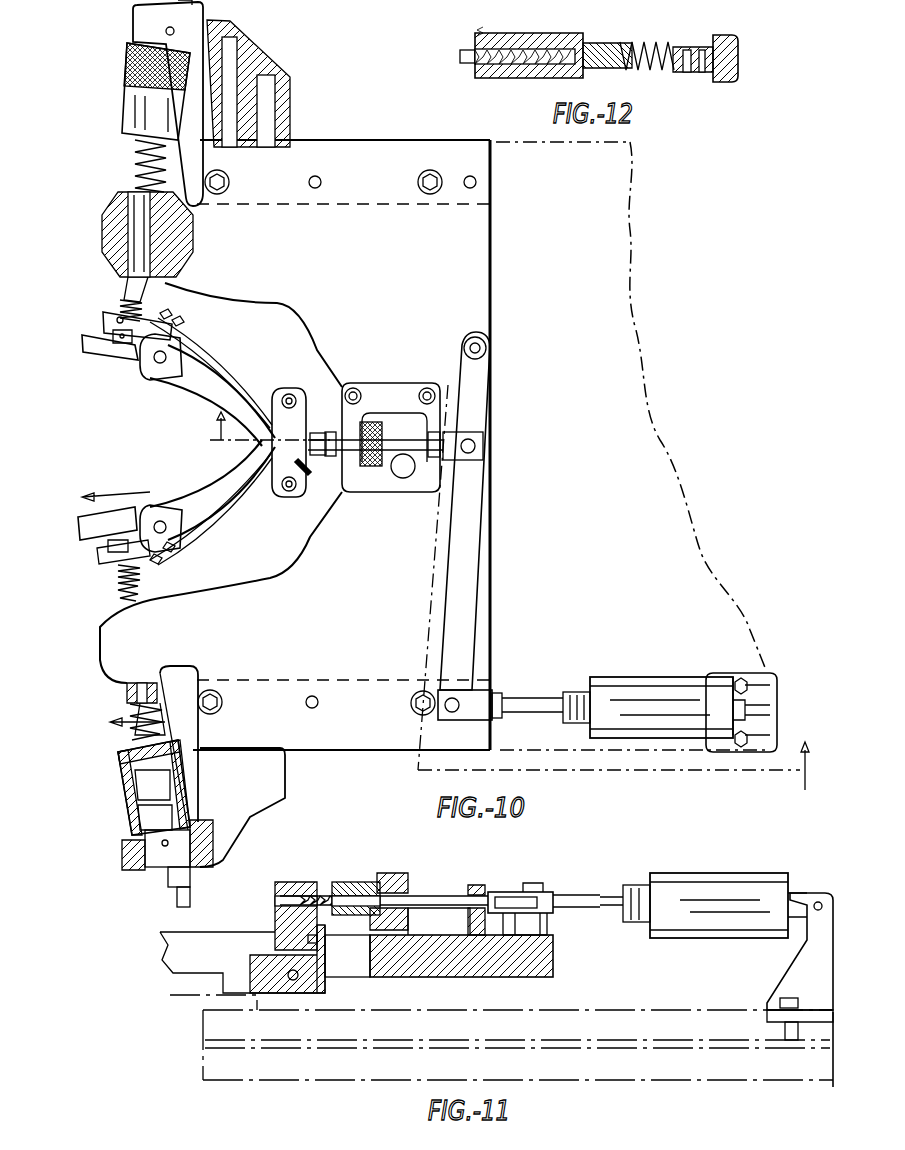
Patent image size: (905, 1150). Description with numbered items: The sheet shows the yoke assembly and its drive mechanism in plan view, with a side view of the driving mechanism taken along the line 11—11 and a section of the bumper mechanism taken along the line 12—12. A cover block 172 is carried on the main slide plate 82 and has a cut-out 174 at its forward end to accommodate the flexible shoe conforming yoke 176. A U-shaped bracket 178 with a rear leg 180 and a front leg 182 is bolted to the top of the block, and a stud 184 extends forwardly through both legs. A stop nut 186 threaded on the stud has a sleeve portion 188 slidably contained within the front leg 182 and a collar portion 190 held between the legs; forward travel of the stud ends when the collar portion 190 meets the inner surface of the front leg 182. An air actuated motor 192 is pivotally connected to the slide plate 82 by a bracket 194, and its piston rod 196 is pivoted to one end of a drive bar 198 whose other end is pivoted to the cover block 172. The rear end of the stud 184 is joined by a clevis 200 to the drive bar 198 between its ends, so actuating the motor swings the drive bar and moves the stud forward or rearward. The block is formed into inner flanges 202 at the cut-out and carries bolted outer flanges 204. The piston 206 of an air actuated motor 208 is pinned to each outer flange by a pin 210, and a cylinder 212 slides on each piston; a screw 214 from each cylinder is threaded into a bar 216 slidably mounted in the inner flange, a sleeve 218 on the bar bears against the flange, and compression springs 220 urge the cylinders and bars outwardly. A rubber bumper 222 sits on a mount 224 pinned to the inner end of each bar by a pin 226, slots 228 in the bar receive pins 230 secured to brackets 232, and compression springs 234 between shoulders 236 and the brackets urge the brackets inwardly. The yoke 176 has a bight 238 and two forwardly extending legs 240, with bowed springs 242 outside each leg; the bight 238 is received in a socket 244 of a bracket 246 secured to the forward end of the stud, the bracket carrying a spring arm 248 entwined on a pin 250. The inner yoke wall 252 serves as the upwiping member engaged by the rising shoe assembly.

In FIG. 10, the slide plate 82 is at (649, 324).
In FIG. 11, the slide plate 82 is at (690, 1024).
In FIG. 10, the cover block 172 is at (389, 301).
In FIG. 11, the cover block 172 is at (550, 966).
In FIG. 10, the cut-out 174 is at (312, 354).
In FIG. 10, the yoke 176 is at (146, 435).
In FIG. 10, the U-shaped bracket 178 is at (380, 386).
In FIG. 11, the U-shaped bracket 178 is at (420, 922).
In FIG. 10, the rear leg 180 is at (412, 468).
In FIG. 11, the rear leg 180 is at (470, 921).
In FIG. 10, the front leg 182 is at (321, 438).
In FIG. 11, the front leg 182 is at (360, 924).
In FIG. 10, the stud 184 is at (418, 442).
In FIG. 11, the stud 184 is at (450, 893).
In FIG. 10, the stop nut 186 is at (364, 460).
In FIG. 11, the stop nut 186 is at (378, 875).
In FIG. 11, the sleeve portion 188 is at (342, 888).
In FIG. 10, the collar portion 190 is at (378, 467).
In FIG. 11, the collar portion 190 is at (398, 876).
In FIG. 10, the air actuated motor 192 is at (656, 686).
In FIG. 11, the air actuated motor 192 is at (730, 890).
In FIG. 10, the bracket 194 is at (770, 676).
In FIG. 11, the bracket 194 is at (826, 966).
In FIG. 10, the piston rod 196 is at (527, 702).
In FIG. 11, the piston rod 196 is at (602, 898).
In FIG. 10, the drive bar 198 is at (470, 547).
In FIG. 11, the drive bar 198 is at (508, 896).
In FIG. 10, the clevis 200 is at (470, 436).
In FIG. 10, the inner flanges 202 is at (102, 228).
In FIG. 10, the outer flanges 204 is at (245, 58).
In FIG. 10, the piston 206 is at (150, 780).
In FIG. 10, the air actuated motor 208 is at (115, 89).
In FIG. 10, the pin 210 is at (168, 28).
In FIG. 10, the cylinder 212 is at (140, 117).
In FIG. 10, the screw 214 is at (128, 738).
In FIG. 10, the bar 216 is at (150, 262).
In FIG. 12, the bar 216 is at (598, 68).
In FIG. 10, the sleeve 218 is at (128, 186).
In FIG. 10, the compression springs 220 is at (134, 150).
In FIG. 10, the rubber bumper 222 is at (98, 352).
In FIG. 12, the rubber bumper 222 is at (740, 52).
In FIG. 10, the mount 224 is at (104, 548).
In FIG. 12, the mount 224 is at (712, 78).
In FIG. 10, the pin 226 is at (106, 332).
In FIG. 12, the pin 226 is at (698, 80).
In FIG. 10, the slots 228 is at (140, 317).
In FIG. 12, the slots 228 is at (664, 46).
In FIG. 10, the pins 230 is at (100, 560).
In FIG. 12, the pins 230 is at (690, 74).
In FIG. 10, the brackets 232 is at (154, 560).
In FIG. 12, the brackets 232 is at (688, 46).
In FIG. 10, the compression springs 234 is at (120, 290).
In FIG. 12, the compression springs 234 is at (648, 72).
In FIG. 10, the shoulders 236 is at (118, 604).
In FIG. 12, the shoulders 236 is at (624, 42).
In FIG. 10, the bight 238 is at (262, 443).
In FIG. 10, the legs 240 is at (186, 380).
In FIG. 10, the bowed springs 242 is at (240, 502).
In FIG. 11, the socket 244 is at (324, 984).
In FIG. 10, the bracket 246 is at (263, 480).
In FIG. 11, the bracket 246 is at (288, 922).
In FIG. 10, the spring arm 248 is at (212, 355).
In FIG. 10, the pin 250 is at (290, 378).
In FIG. 10, the inner yoke wall 252 is at (202, 392).
In FIG. 10, the section line 11— 11 is at (813, 774).
In FIG. 10, the section line 12— 12 is at (132, 599).